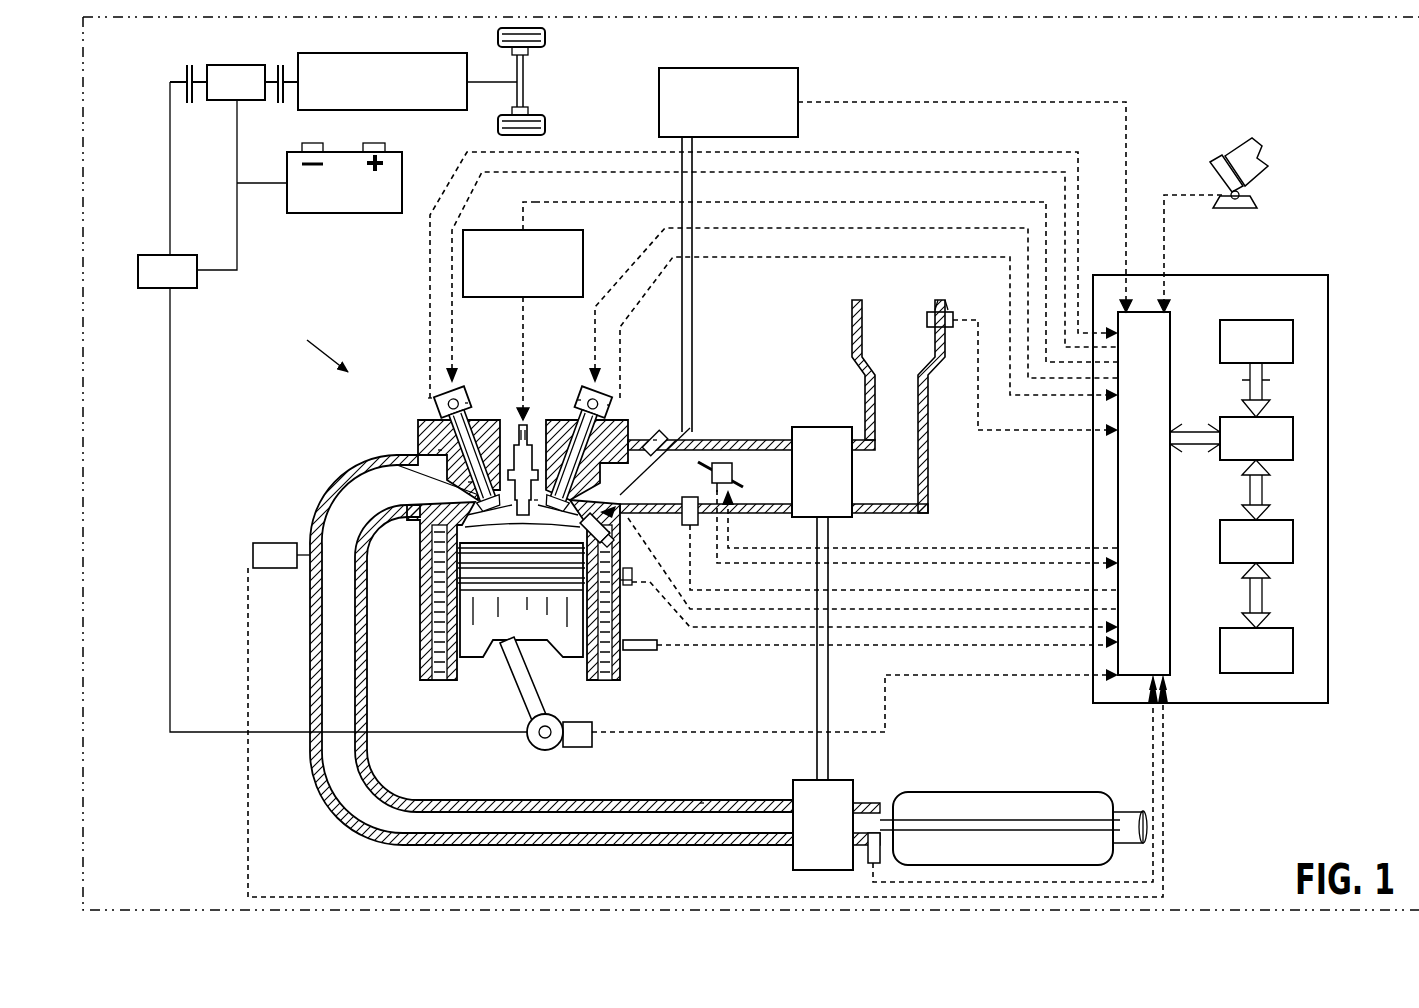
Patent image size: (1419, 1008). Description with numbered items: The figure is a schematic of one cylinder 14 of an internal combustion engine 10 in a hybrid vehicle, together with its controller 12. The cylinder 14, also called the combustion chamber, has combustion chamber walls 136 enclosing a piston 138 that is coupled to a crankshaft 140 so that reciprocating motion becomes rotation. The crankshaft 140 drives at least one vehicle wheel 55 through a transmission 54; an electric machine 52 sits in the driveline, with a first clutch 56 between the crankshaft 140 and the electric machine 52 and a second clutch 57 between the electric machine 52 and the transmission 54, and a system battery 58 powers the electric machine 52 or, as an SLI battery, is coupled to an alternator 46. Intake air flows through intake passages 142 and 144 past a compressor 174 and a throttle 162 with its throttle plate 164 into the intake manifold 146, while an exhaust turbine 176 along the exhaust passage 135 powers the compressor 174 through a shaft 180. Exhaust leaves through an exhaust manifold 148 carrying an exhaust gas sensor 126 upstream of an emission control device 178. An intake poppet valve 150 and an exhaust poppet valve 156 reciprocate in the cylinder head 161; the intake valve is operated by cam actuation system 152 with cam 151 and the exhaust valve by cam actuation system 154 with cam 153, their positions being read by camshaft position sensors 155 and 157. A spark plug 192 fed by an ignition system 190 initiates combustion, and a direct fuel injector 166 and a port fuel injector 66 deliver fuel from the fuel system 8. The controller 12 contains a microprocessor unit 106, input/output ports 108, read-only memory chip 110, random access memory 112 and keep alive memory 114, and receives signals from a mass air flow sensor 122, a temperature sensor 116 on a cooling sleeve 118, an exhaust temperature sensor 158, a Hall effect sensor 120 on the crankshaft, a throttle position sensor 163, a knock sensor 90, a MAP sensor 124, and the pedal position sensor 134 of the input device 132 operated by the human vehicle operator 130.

The fuel system 8 is at (762, 68).
The internal combustion engine 10 is at (308, 348).
The controller 12 is at (1328, 280).
The cylinder 14 is at (470, 522).
The alternator 46 is at (140, 288).
The electric machine 52 is at (222, 64).
The transmission 54 is at (440, 110).
The vehicle wheel 55 is at (497, 38).
The first clutch 56 is at (186, 72).
The second clutch 57 is at (277, 68).
The system battery 58 is at (340, 213).
The port fuel injector 66 is at (655, 440).
The knock sensor 90 is at (630, 652).
The microprocessor unit 106 is at (1293, 436).
The input/output ports 108 is at (1172, 318).
The read-only memory chip 110 is at (1293, 340).
The random access memory 112 is at (1293, 542).
The keep alive memory 114 is at (1293, 650).
The temperature sensor 116 is at (628, 588).
The cooling sleeve 118 is at (625, 650).
The Hall effect sensor 120 is at (580, 748).
The mass air flow sensor 122 is at (950, 310).
The MAP sensor 124 is at (694, 528).
The exhaust gas sensor 126 is at (253, 552).
The human vehicle operator 130 is at (1268, 158).
The input device 132 is at (1215, 170).
The pedal position sensor 134 is at (1257, 202).
The exhaust passage 135 is at (702, 803).
The combustion chamber walls 136 is at (460, 668).
The piston 138 is at (505, 630).
The crankshaft 140 is at (536, 752).
The intake passage 142 is at (898, 406).
The intake passage 144 is at (767, 475).
The intake manifold 146 is at (706, 476).
The exhaust manifold 148 is at (551, 650).
The intake poppet valve 150 is at (536, 500).
The cam 151 is at (578, 400).
The cam actuation system 152 is at (590, 380).
The cam 153 is at (468, 402).
The cam actuation system 154 is at (467, 380).
The camshaft position sensor 155 is at (610, 405).
The exhaust poppet valve 156 is at (470, 482).
The camshaft position sensor 157 is at (435, 398).
The temperature sensor 158 is at (870, 865).
The cylinder head 161 is at (440, 450).
The throttle 162 is at (733, 462).
The throttle position sensor 163 is at (728, 505).
The throttle plate 164 is at (685, 455).
The direct fuel injector 166 is at (585, 515).
The compressor 174 is at (860, 472).
The exhaust turbine 176 is at (836, 825).
The emission control device 178 is at (985, 792).
The shaft 180 is at (832, 742).
The ignition system 190 is at (480, 230).
The spark plug 192 is at (516, 455).